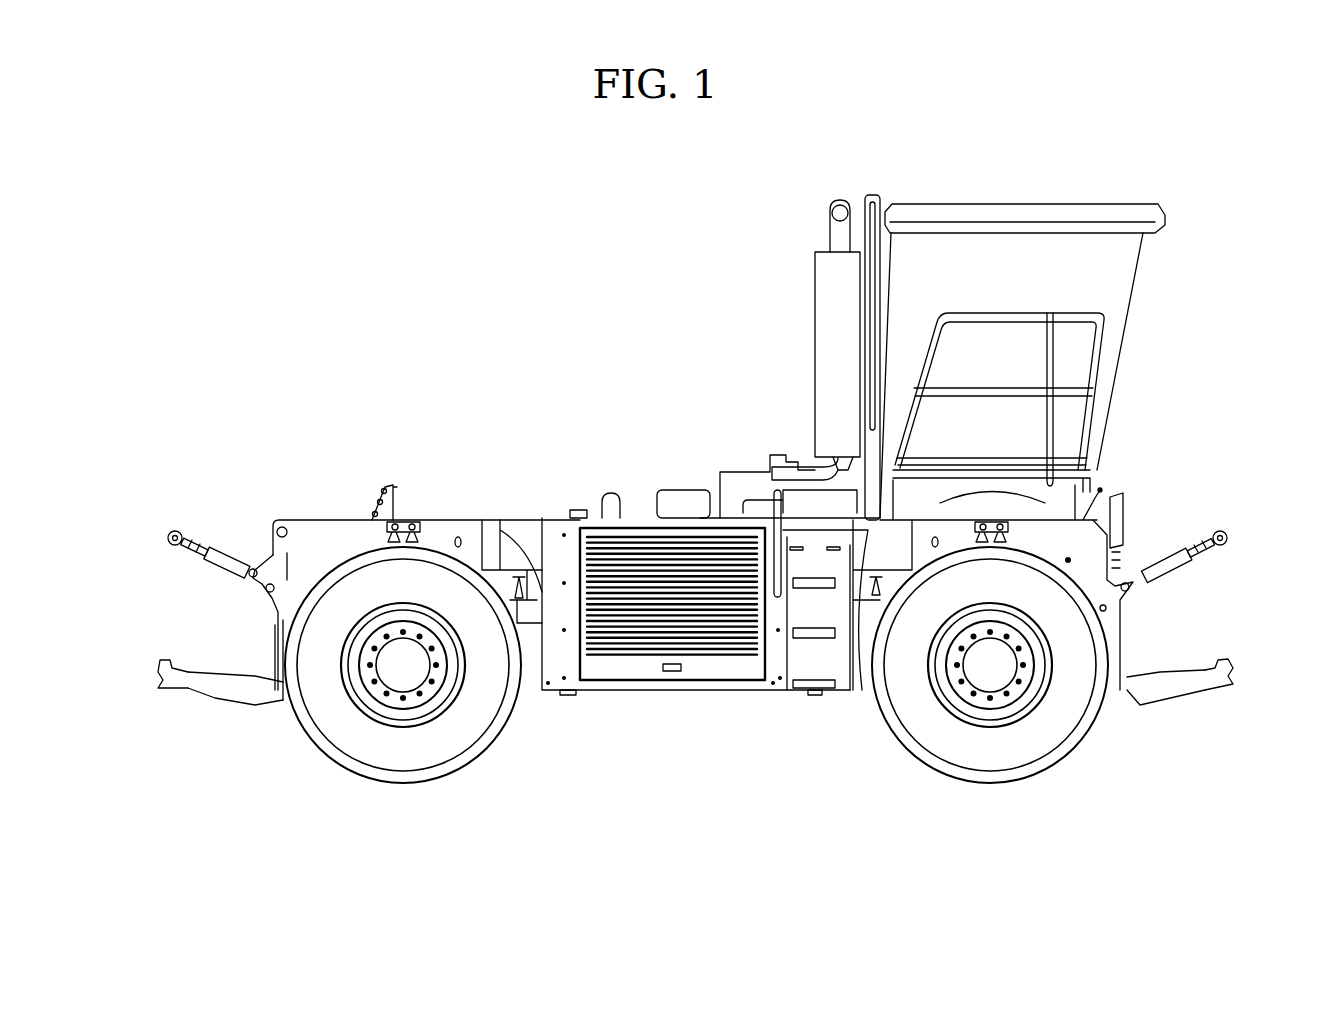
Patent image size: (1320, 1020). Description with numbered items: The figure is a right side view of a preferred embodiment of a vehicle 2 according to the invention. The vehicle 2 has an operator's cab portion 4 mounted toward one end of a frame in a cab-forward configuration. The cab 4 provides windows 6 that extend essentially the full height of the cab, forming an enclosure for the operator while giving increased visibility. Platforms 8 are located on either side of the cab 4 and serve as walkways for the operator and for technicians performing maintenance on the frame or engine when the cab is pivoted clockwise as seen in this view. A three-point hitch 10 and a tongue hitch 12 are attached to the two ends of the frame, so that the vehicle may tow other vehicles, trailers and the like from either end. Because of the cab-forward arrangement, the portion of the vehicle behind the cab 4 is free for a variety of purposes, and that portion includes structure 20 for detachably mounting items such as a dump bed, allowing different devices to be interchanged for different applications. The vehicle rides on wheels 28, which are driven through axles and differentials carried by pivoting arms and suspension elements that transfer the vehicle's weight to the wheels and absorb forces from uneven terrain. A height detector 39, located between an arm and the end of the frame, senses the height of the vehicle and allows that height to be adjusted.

The vehicle 2 is at (652, 420).
The operator's cab portion 4 is at (1175, 281).
The windows 6 is at (1010, 280).
The platforms 8 is at (1060, 475).
The three-point hitch 10 is at (220, 680).
The tongue hitch 12 is at (218, 700).
The structure for detachably mounting items 20 is at (372, 491).
The wheels 28 is at (443, 752).
The height detector 39 is at (527, 573).